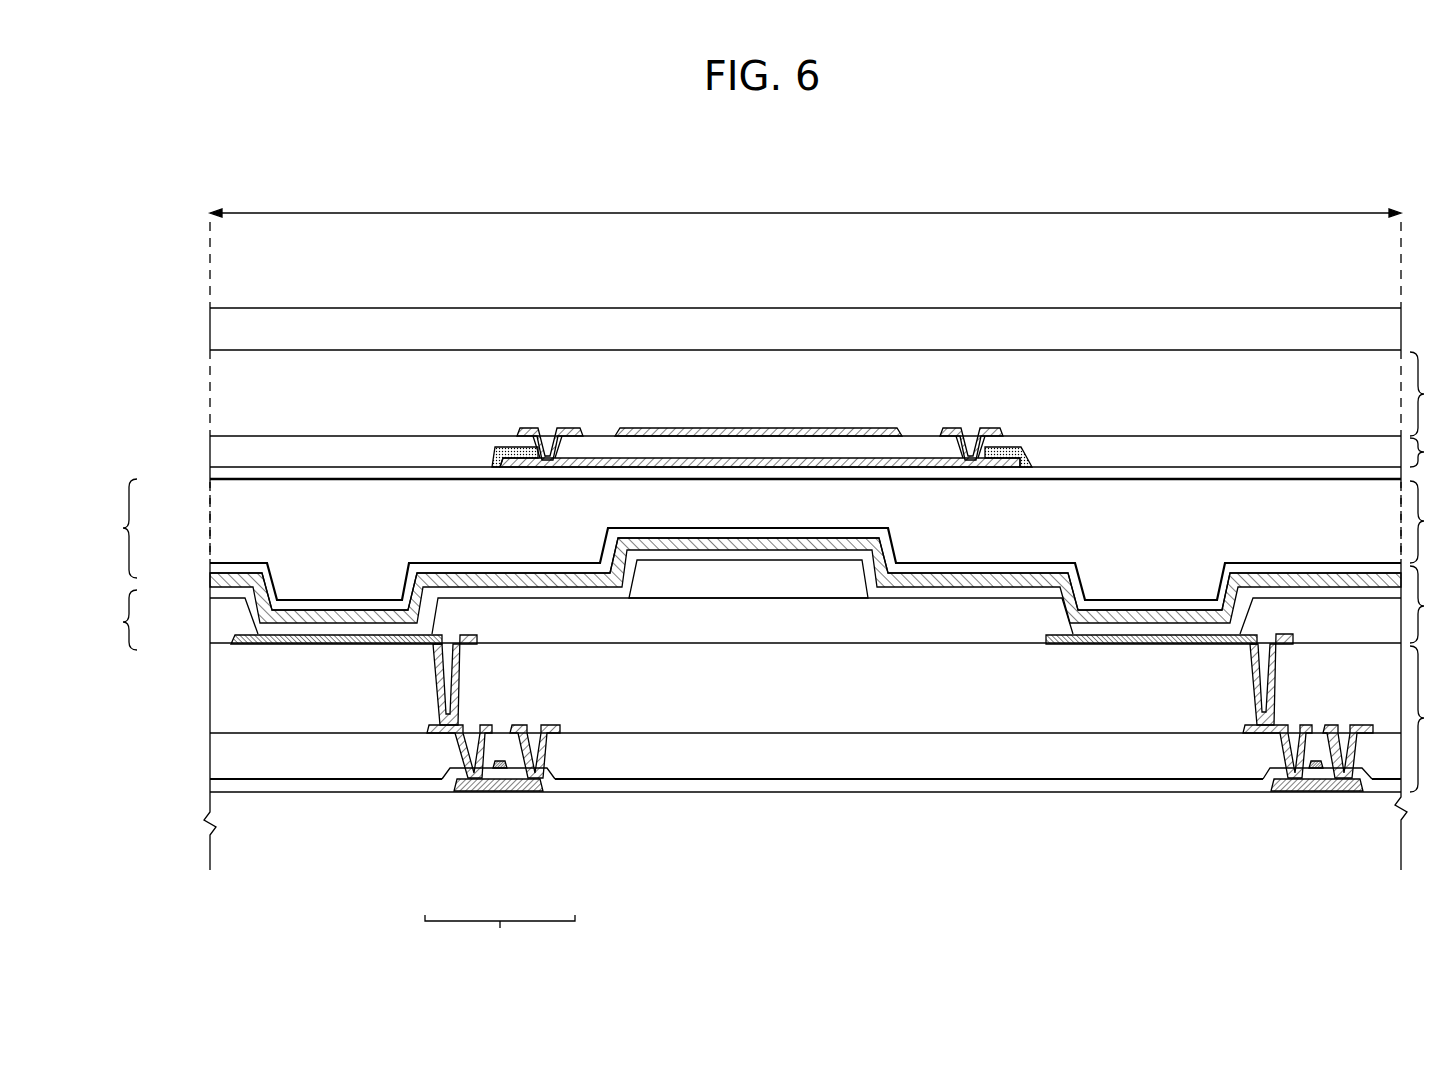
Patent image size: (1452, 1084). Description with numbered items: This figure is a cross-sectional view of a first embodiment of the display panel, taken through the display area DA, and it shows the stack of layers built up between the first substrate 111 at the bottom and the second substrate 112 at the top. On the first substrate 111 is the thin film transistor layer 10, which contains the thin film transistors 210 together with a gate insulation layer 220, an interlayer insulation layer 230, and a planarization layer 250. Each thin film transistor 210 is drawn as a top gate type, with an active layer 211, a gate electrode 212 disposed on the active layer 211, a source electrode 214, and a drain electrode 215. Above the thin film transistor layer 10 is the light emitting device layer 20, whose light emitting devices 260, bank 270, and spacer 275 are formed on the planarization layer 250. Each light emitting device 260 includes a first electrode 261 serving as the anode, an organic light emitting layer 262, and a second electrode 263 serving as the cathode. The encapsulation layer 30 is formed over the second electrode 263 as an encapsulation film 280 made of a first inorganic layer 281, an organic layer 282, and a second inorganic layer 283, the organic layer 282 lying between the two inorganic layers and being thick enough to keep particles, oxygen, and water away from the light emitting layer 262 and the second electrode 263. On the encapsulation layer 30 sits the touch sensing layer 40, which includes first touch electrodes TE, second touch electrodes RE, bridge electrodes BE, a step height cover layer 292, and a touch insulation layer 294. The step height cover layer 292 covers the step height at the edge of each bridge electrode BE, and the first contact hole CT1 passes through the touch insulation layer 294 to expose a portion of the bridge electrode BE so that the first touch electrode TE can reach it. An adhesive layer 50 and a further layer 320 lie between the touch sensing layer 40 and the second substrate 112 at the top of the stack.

The second substrate 112 is at (218, 330).
The adhesive layer 320 is at (218, 385).
The touch insulation layer 294 is at (218, 455).
The second inorganic layer 283 is at (216, 476).
The organic layer 282 is at (216, 520).
The first inorganic layer 281 is at (218, 570).
The encapsulation film 280 is at (104, 528).
The second electrode 263 is at (214, 580).
The organic light emitting layer 262 is at (248, 615).
The first electrode 261 is at (245, 636).
The light emitting device 260 is at (104, 620).
The bank 270 is at (700, 627).
The spacer 275 is at (780, 575).
The planarization layer 250 is at (218, 686).
The interlayer insulation layer 230 is at (218, 757).
The gate insulation layer 220 is at (218, 783).
The first substrate 111 is at (218, 830).
The thin film transistor 210 is at (500, 937).
The active layer 211 is at (508, 792).
The gate electrode 212 is at (500, 770).
The source electrode 214 is at (442, 735).
The drain electrode 215 is at (550, 735).
The step height cover layer 292 is at (1013, 447).
The bridge electrode BE is at (715, 458).
The first touch electrode TE is at (561, 428).
The second touch electrode RE is at (808, 428).
The first contact hole CT1 is at (547, 414).
The display area DA is at (805, 372).
The adhesive layer 50 is at (1431, 394).
The touch sensing layer 40 is at (1431, 452).
The encapsulation layer 30 is at (1431, 522).
The light emitting device layer 20 is at (1431, 604).
The thin film transistor layer 10 is at (1431, 719).